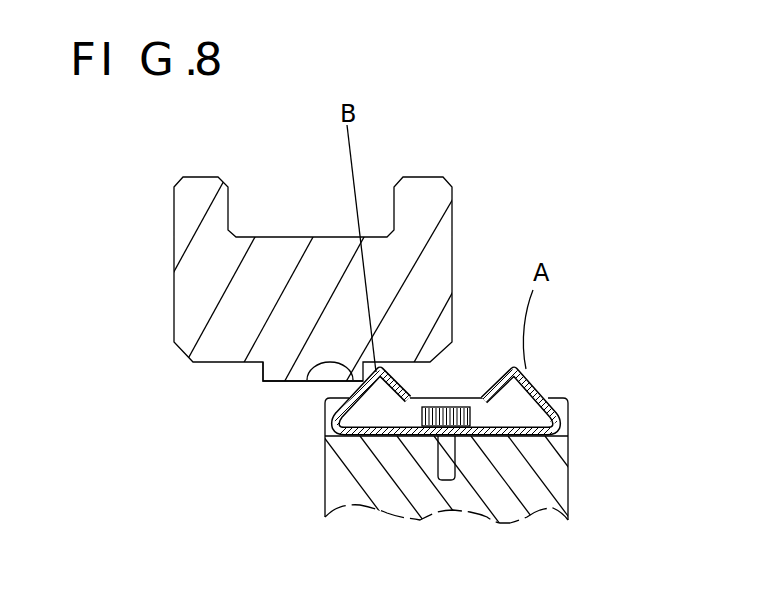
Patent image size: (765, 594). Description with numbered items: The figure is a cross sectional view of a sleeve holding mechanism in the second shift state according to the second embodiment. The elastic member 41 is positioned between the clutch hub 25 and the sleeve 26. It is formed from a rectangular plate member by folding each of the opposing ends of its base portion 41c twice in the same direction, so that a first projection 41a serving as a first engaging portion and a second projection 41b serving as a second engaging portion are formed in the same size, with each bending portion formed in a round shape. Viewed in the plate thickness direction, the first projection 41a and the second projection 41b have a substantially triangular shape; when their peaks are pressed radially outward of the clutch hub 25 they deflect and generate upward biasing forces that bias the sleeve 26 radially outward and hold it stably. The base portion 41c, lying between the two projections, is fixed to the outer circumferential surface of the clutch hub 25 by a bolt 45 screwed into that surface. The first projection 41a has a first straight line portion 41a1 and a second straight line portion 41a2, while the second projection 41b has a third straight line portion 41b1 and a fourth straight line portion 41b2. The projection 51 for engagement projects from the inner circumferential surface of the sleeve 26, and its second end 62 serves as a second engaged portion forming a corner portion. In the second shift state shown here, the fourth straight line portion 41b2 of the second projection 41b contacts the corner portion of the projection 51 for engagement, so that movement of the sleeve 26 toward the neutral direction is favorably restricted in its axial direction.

The sleeve 26 is at (183, 212).
The second end 62 is at (265, 380).
The projection for engagement 51 is at (283, 368).
The clutch hub 25 is at (550, 463).
The elastic member 41 is at (437, 358).
The first projection 41a is at (565, 334).
The first straight line portion 41a1 is at (565, 397).
The second straight line portion 41a2 is at (487, 400).
The second projection 41b is at (383, 358).
The third straight line portion 41b1 is at (420, 372).
The fourth straight line portion 41b2 is at (350, 397).
The base portion 41c is at (520, 468).
The bolt 45 is at (452, 407).